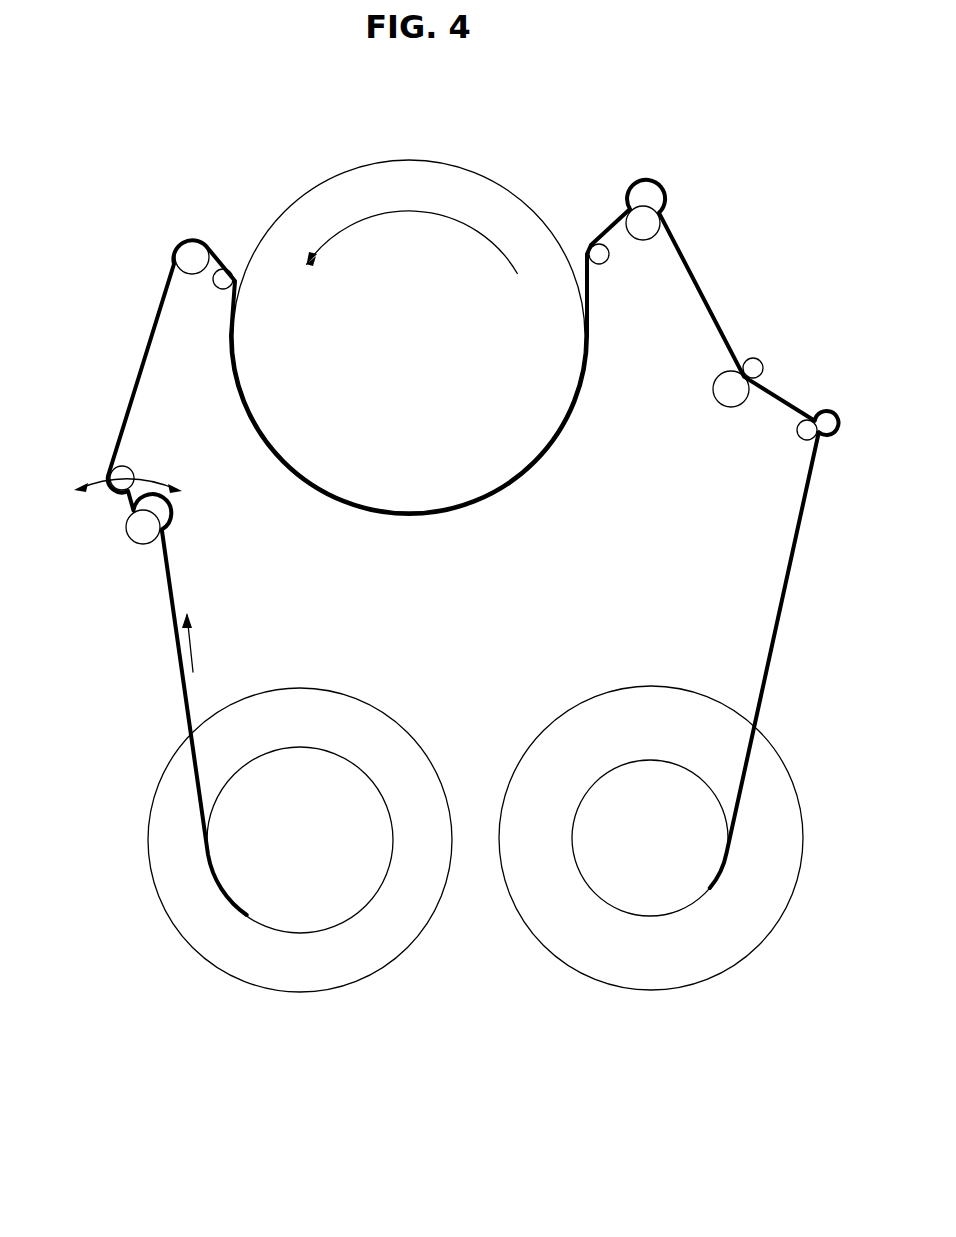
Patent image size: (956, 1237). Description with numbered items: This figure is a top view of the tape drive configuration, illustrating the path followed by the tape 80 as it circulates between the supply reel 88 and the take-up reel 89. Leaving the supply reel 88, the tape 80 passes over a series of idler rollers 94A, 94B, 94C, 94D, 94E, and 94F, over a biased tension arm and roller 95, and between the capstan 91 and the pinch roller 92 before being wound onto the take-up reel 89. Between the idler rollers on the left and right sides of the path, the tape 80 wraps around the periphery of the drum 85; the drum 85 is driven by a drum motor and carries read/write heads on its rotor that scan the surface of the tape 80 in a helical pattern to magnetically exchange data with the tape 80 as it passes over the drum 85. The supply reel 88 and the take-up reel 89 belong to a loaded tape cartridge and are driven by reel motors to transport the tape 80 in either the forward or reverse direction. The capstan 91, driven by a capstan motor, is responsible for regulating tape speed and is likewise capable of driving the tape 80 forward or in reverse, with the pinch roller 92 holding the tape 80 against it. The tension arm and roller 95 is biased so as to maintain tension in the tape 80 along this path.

The drum 85 is at (505, 185).
The tape 80 is at (168, 583).
The idler roller 94A is at (127, 535).
The idler roller 94B is at (190, 252).
The idler roller 94C is at (218, 287).
The idler roller 94D is at (608, 258).
The idler roller 94E is at (650, 225).
The idler roller 94F is at (768, 457).
The capstan 91 is at (715, 385).
The pinch roller 92 is at (758, 360).
The biased tension arm and roller 95 is at (128, 468).
The supply reel 88 is at (372, 712).
The take-up reel 89 is at (590, 716).